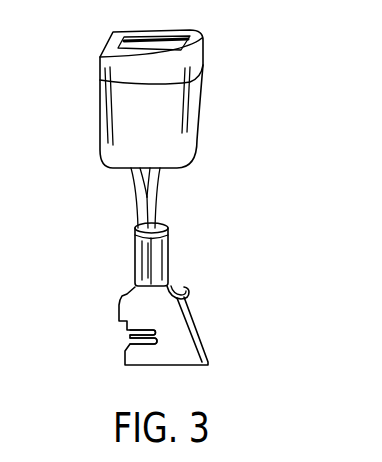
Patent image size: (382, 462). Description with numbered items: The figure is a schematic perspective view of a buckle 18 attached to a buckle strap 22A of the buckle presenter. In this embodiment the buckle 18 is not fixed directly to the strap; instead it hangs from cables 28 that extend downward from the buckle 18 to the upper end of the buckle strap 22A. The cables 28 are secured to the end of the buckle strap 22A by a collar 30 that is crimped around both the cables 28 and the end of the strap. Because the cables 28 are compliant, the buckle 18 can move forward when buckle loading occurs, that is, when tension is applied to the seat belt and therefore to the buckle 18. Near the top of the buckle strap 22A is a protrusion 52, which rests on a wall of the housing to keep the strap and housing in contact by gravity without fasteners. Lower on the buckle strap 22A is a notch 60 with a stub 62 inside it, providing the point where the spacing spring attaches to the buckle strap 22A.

The buckle 18 is at (106, 45).
The cables 28 is at (161, 200).
The collar 30 is at (136, 253).
The protrusion 52 is at (187, 290).
The buckle strap 22A is at (193, 329).
The notch 60 is at (125, 335).
The stub 62 is at (153, 345).